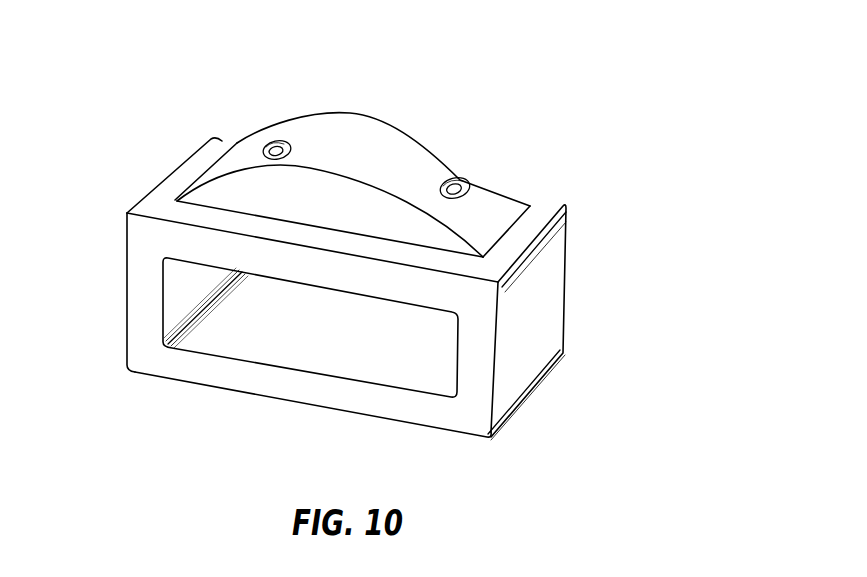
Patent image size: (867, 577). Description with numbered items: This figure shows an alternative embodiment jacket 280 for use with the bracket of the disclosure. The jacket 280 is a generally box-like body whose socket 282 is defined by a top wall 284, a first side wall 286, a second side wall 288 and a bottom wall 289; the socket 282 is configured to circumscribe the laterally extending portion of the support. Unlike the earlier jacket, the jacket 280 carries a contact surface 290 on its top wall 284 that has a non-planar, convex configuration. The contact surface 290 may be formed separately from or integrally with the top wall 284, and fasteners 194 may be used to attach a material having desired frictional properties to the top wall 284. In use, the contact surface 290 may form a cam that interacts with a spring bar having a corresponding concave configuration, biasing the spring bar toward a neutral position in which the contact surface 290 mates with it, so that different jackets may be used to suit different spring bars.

The jacket 280 is at (375, 72).
The contact surface 290 is at (388, 143).
The fasteners 194 is at (462, 182).
The top wall 284 is at (180, 233).
The first side wall 286 is at (142, 300).
The socket 282 is at (328, 349).
The second side wall 288 is at (477, 372).
The bottom wall 289 is at (403, 402).